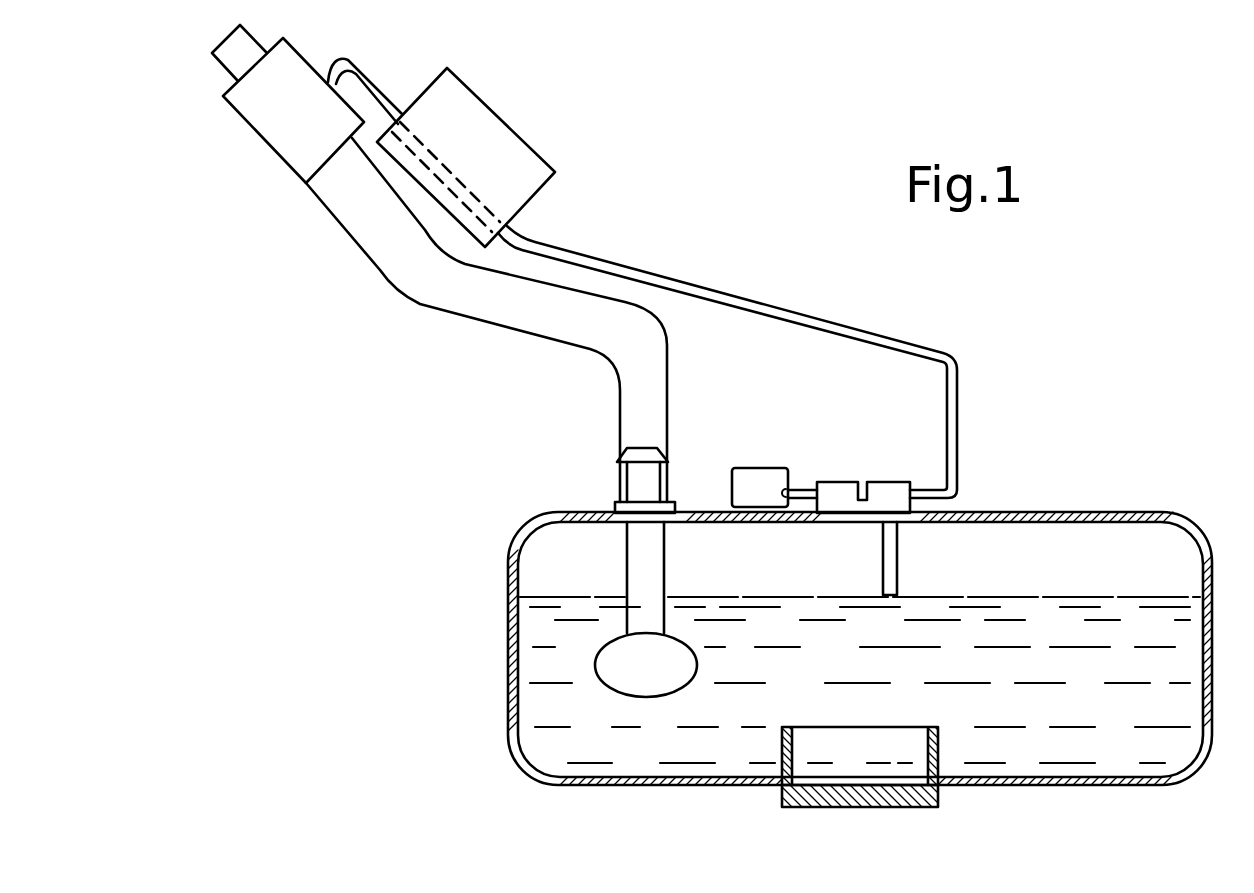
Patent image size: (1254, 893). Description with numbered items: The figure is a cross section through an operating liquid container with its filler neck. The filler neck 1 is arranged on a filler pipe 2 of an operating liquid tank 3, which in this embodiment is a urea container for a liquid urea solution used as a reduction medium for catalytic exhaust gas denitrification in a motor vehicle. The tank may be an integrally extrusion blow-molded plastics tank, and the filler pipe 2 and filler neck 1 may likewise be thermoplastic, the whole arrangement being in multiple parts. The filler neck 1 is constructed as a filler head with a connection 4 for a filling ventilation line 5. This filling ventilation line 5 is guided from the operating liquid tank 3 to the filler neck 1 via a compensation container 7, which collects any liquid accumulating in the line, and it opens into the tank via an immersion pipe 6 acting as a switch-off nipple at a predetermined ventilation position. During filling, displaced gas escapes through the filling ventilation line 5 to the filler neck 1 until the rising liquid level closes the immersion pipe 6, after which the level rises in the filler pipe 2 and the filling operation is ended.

The filler neck 1 is at (292, 78).
The filler pipe 2 is at (468, 312).
The operating liquid tank 3 is at (1030, 505).
The connection 4 is at (348, 63).
The filling ventilation line 5 is at (563, 250).
The immersion pipe 6 is at (893, 563).
The compensation container 7 is at (490, 137).